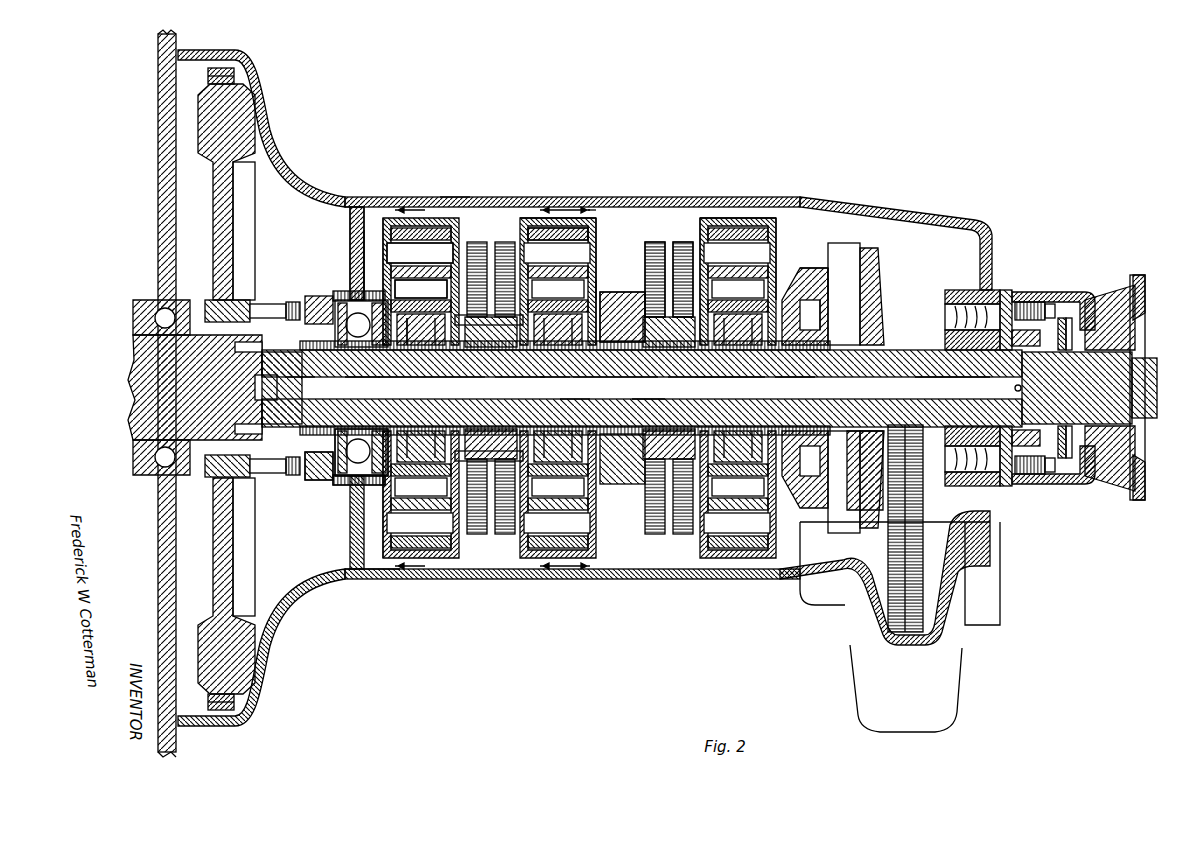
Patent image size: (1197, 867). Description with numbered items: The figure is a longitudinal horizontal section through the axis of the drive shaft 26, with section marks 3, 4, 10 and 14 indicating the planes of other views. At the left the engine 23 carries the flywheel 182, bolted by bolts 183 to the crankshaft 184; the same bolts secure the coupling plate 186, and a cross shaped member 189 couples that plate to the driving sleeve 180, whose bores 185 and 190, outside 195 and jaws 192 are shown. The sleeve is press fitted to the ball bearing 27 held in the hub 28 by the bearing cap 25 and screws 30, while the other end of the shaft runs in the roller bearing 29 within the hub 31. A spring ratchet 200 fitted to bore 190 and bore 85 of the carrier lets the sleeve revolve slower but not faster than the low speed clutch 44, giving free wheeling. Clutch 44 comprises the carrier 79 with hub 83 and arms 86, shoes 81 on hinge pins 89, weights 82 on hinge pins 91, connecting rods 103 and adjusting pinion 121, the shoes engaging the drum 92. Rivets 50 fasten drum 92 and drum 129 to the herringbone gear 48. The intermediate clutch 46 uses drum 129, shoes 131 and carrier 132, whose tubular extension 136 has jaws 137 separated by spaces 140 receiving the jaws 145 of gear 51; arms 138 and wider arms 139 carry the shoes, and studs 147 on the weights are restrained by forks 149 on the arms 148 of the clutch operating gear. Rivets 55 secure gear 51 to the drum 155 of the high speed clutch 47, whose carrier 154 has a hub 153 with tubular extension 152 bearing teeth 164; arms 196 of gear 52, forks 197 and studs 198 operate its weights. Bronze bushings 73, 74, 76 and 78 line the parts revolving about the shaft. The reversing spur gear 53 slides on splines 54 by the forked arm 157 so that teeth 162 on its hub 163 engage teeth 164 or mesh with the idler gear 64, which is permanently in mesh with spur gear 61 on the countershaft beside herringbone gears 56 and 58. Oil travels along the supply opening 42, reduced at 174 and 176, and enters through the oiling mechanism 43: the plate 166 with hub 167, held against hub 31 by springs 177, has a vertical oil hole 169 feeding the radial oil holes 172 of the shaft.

The section line 3 is at (265, 262).
The first clutch 4 is at (421, 389).
The second clutch 10 is at (558, 389).
The third clutch 14 is at (596, 389).
The engine 23 is at (168, 95).
The bearing cap 25 is at (345, 480).
The drive shaft 26 is at (262, 405).
The ball bearing 27 is at (355, 505).
The hub 28 is at (345, 560).
The roller bearing 29 is at (965, 250).
The screws 30 is at (320, 480).
The hub 31 is at (950, 310).
The oil supply opening 42 is at (709, 388).
The oiling mechanism 43 is at (1045, 320).
The low speed clutch 44 is at (433, 215).
The intermediate speed clutch 46 is at (570, 260).
The high speed clutch 47 is at (735, 230).
The herringbone gear 48 is at (473, 242).
The rivets 50 is at (473, 534).
The herringbone gear 51 is at (617, 377).
The herringbone gear 52 is at (815, 295).
The spur gear 53 is at (853, 290).
The multiple splines 54 is at (943, 300).
The rivets 55 is at (605, 350).
The herringbone gear 56 is at (505, 534).
The herringbone gear 58 is at (655, 545).
The spur gear 61 is at (930, 300).
The idler gear 64 is at (915, 570).
The bronze bushing 73 is at (323, 300).
The bronze bushing 74 is at (507, 387).
The bronze bushing 76 is at (532, 387).
The bronze bushing 78 is at (681, 387).
The carrier 79 is at (465, 540).
The clutch shoes 81 is at (357, 215).
The clutch operating weights 82 is at (420, 260).
The hub portion 83 is at (421, 325).
The inside diameter 85 is at (474, 387).
The arms 86 is at (410, 230).
The hinge pins 89 is at (380, 250).
The hinge pins 91 is at (370, 230).
The clutch drum 92 is at (400, 555).
The connecting rods 103 is at (665, 535).
The adjusting pinion 121 is at (450, 200).
The clutch drum 129 is at (540, 270).
The clutch shoes 131 is at (598, 285).
The carrier 132 is at (556, 387).
The tubular extension 136 is at (589, 387).
The jaws 137 is at (644, 387).
The arms 138 is at (545, 230).
The wider arms 139 is at (580, 250).
The spaces 140 is at (575, 409).
The jaws 145 is at (648, 410).
The stud 147 is at (512, 325).
The arms 148 is at (650, 285).
The forks 149 is at (660, 260).
The tubular extension 152 is at (795, 387).
The hub 153 is at (712, 387).
The carrier 154 is at (748, 387).
The clutch drum 155 is at (700, 230).
The forked arm 157 is at (878, 300).
The teeth 162 is at (815, 320).
The hub 163 is at (822, 310).
The teeth 164 is at (808, 330).
The plate 166 is at (1030, 470).
The hub 167 is at (1060, 330).
The vertical oil hole 169 is at (1085, 475).
The radial oil holes 172 is at (1090, 355).
The reduced diameter 174 is at (932, 387).
The reduced diameter 176 is at (970, 387).
The springs 177 is at (1035, 470).
The driving sleeve 180 is at (360, 387).
The flywheel 182 is at (222, 205).
The bolts 183 is at (225, 310).
The crankshaft 184 is at (150, 335).
The bore 185 is at (390, 387).
The coupling plate 186 is at (255, 520).
The cross shaped member 189 is at (130, 400).
The bore 190 is at (417, 387).
The jaws 192 is at (255, 370).
The outside 195 is at (300, 387).
The arms 196 is at (795, 275).
The forks 197 is at (770, 245).
The studs 198 is at (700, 265).
The spring ratchet 200 is at (445, 387).